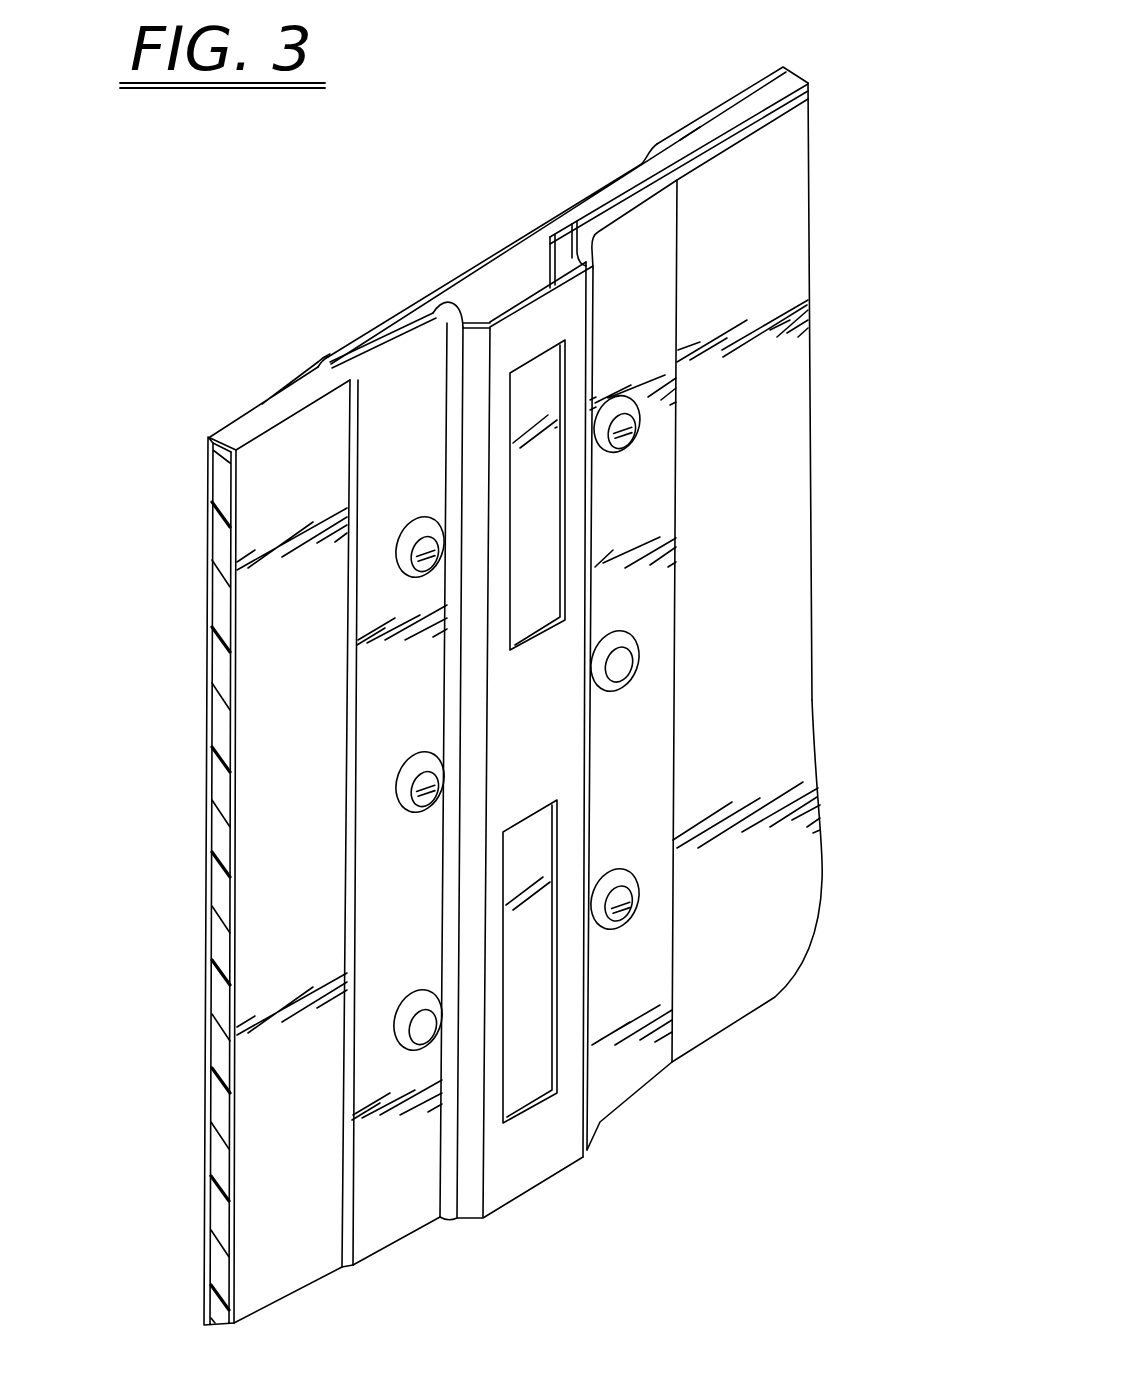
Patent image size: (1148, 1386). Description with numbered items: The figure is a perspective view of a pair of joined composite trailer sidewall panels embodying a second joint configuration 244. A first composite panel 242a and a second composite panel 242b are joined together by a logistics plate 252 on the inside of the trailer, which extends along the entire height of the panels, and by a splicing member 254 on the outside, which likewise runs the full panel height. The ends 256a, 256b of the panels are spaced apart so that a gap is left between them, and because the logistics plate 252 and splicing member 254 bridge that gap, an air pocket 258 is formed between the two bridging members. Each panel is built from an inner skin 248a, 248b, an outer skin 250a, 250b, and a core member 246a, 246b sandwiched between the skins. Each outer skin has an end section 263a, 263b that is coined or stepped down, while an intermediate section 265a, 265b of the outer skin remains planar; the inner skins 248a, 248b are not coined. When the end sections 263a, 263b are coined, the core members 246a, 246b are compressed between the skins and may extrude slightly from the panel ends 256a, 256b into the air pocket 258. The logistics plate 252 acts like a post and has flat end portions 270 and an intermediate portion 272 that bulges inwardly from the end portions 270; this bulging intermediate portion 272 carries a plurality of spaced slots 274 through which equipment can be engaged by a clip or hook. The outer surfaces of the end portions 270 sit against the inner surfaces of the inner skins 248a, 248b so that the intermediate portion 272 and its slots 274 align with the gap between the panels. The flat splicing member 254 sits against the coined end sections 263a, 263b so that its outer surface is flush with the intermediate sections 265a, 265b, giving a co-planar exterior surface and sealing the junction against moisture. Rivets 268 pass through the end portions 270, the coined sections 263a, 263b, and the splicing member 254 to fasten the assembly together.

The first composite panel 242a is at (284, 1300).
The second composite panel 242b is at (735, 1013).
The joint configuration 244 is at (533, 206).
The core member 246a is at (221, 737).
The core member 246b is at (796, 78).
The inner skin 248a is at (232, 790).
The inner skin 248b is at (785, 103).
The outer skin 250a is at (206, 700).
The outer skin 250b is at (742, 78).
The logistics plate 252 is at (616, 1072).
The splicing member 254 is at (385, 304).
The end of first panel 256a is at (442, 345).
The end of second panel 256b is at (561, 254).
The air pocket 258 is at (502, 297).
The end section 263a is at (390, 343).
The end section 263b is at (640, 180).
The intermediate section 265a is at (240, 420).
The intermediate section 265b is at (687, 143).
The rivets 268 is at (631, 452).
The end portions 270 is at (660, 706).
The intermediate portion 272 is at (493, 1197).
The slots 274 is at (552, 848).